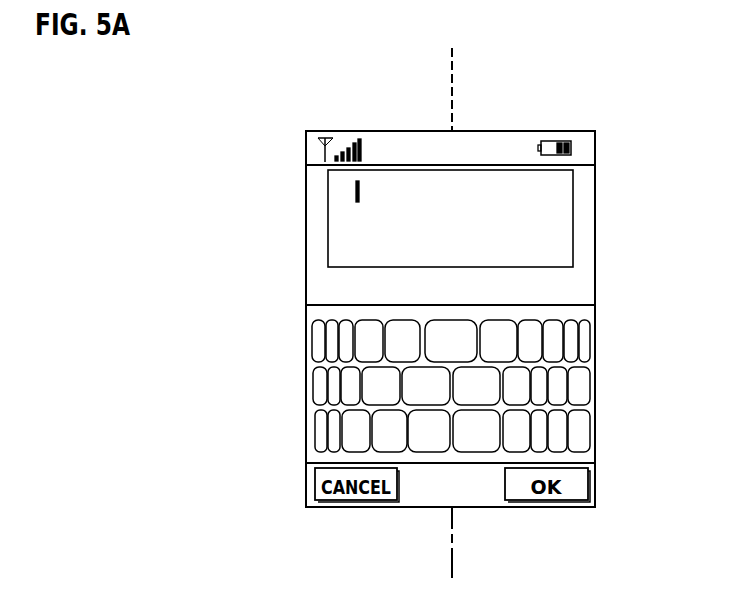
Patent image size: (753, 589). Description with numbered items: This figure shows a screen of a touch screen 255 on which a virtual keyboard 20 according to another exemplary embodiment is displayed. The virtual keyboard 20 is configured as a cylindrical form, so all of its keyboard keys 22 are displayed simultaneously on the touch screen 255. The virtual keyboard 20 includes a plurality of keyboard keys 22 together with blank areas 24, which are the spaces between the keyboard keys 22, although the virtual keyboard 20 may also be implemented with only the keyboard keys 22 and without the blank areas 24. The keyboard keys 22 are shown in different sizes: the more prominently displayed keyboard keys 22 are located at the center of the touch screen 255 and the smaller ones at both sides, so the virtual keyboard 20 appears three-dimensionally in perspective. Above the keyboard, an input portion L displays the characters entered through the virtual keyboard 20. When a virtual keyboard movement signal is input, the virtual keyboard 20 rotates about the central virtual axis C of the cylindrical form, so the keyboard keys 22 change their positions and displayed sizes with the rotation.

The touch screen 255 is at (306, 235).
The central virtual axis C is at (452, 88).
The input portion L is at (587, 193).
The virtual keyboard 20 is at (433, 460).
The keyboard keys 22 is at (590, 340).
The blank areas 24 is at (590, 455).